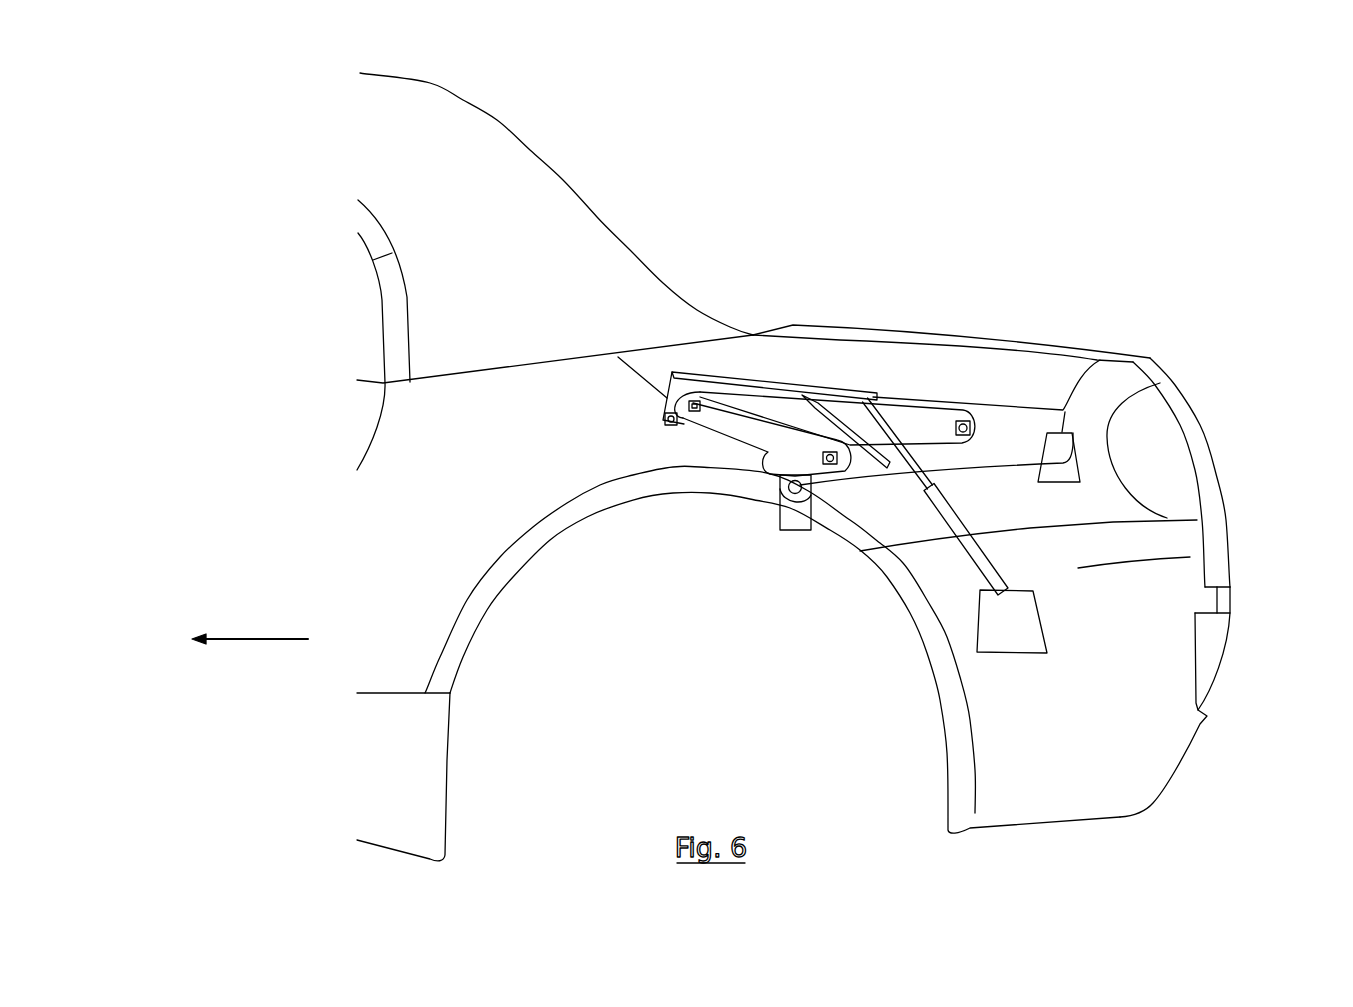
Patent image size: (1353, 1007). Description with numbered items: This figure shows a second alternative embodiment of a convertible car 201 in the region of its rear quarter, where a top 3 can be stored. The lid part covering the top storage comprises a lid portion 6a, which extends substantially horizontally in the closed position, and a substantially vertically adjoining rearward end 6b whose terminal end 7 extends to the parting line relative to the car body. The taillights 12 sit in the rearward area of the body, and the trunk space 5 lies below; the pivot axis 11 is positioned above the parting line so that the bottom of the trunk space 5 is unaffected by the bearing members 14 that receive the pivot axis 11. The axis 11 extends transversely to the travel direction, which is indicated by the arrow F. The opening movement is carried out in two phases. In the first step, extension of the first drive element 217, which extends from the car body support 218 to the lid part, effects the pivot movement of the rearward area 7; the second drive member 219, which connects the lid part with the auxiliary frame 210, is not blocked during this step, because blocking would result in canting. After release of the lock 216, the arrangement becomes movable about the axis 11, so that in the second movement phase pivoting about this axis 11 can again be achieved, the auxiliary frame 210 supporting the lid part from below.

The top 3 is at (553, 187).
The car 201 is at (877, 402).
The lid portion 6a is at (957, 323).
The rearward end 6b is at (1202, 412).
The second drive member 219 is at (874, 390).
The auxiliary frame 210 is at (997, 427).
The pivot axis 11 is at (1100, 360).
The trunk space 5 is at (1087, 467).
The taillights 12 is at (1139, 461).
The bearing members 14 is at (1062, 477).
The first drive element 217 is at (950, 517).
The car body support 218 is at (1013, 642).
The lock 216 is at (795, 520).
The terminal end 7 is at (1240, 543).
The direction of travel F is at (270, 641).